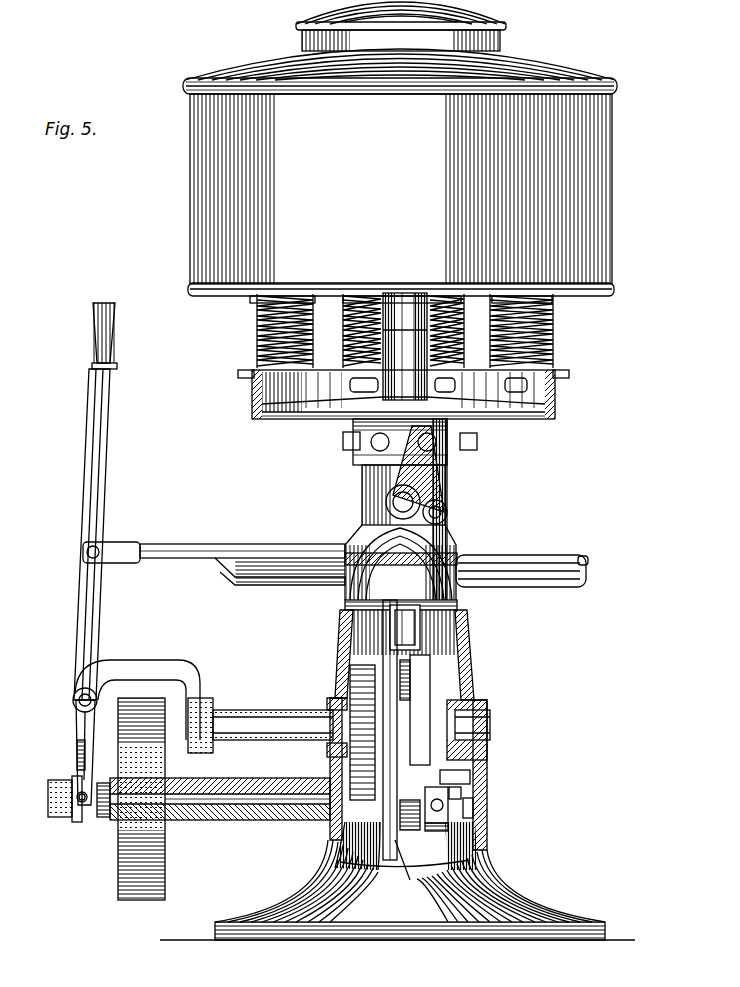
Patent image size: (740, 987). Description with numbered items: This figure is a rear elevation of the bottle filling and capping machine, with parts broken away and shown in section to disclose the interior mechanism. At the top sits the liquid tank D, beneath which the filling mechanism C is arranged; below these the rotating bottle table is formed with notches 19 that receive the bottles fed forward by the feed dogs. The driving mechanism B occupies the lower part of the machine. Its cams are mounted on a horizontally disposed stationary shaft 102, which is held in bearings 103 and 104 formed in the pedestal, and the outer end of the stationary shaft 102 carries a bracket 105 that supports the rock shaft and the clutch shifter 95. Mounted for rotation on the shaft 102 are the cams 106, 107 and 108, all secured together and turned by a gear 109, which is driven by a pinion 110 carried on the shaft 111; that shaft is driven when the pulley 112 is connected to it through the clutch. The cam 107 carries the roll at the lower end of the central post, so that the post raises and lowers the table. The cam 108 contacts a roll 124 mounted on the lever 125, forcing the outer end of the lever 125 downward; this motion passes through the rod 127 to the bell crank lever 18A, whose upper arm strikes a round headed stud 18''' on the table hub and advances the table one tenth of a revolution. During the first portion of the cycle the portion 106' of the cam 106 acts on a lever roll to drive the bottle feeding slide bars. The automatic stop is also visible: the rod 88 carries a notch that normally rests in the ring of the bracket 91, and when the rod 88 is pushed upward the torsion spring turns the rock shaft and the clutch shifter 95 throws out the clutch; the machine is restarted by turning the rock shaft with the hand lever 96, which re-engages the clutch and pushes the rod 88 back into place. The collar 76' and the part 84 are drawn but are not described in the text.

The liquid tank D is at (407, 152).
The filling mechanism C is at (415, 346).
The collar 76' is at (379, 394).
The notches 19 is at (336, 422).
The round headed stud 18''' is at (410, 455).
The bell crank lever 18A is at (428, 490).
The hand lever 96 is at (97, 452).
The rod 88 is at (177, 546).
The driving mechanism B is at (109, 672).
The clutch shifter 95 is at (75, 735).
The bracket 105 is at (192, 680).
The stationary shaft 102 is at (251, 711).
The bearing 104 is at (332, 700).
The gear 109 is at (346, 665).
The rod 127 is at (440, 672).
The bearing 103 is at (482, 702).
The cam 108 is at (490, 765).
The roll 124 is at (488, 782).
The lever 125 is at (490, 802).
The bracket 84 is at (475, 837).
The pinion 110 is at (323, 847).
The bracket 91 is at (99, 824).
The shaft 111 is at (231, 800).
The pulley 112 is at (121, 890).
The cam 107 is at (408, 832).
The cam 106 is at (410, 883).
The portion of cam 106' is at (397, 948).